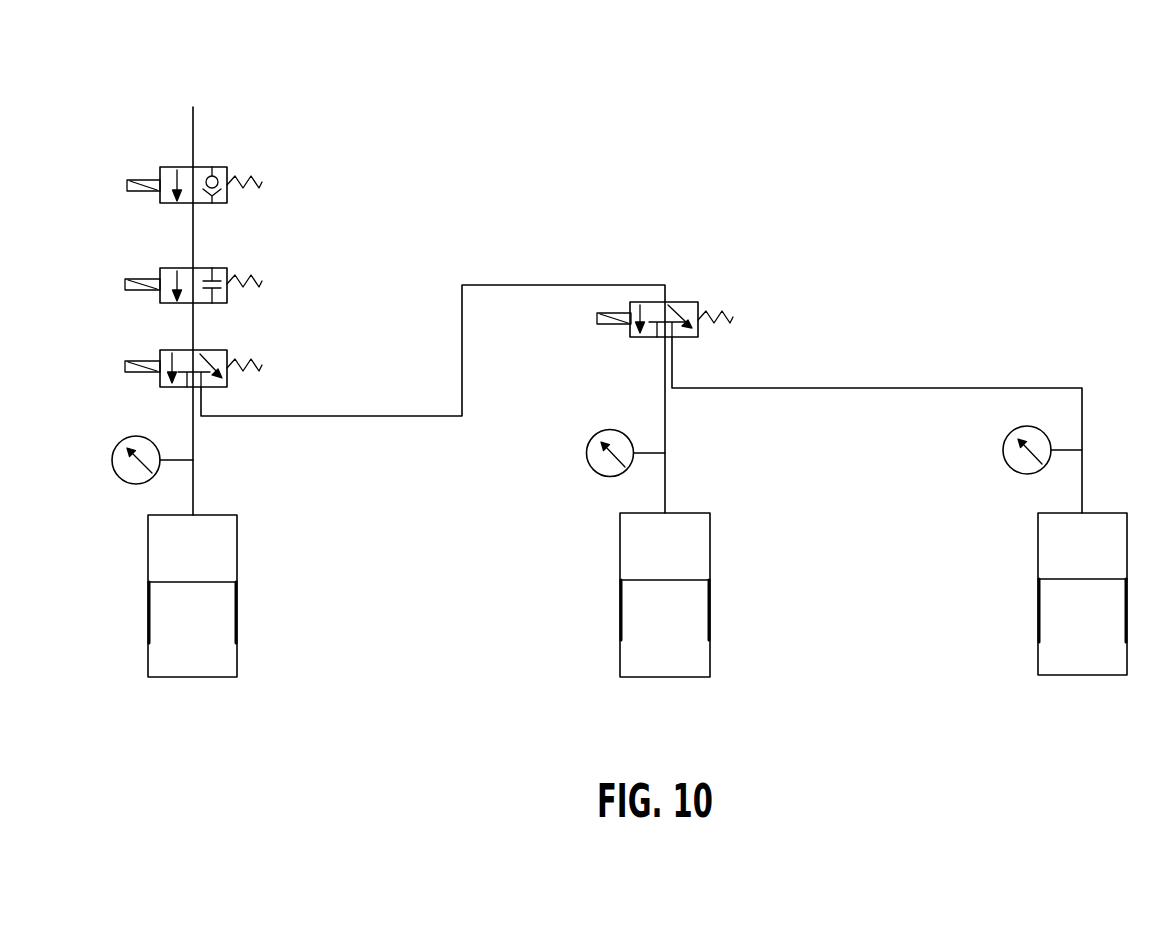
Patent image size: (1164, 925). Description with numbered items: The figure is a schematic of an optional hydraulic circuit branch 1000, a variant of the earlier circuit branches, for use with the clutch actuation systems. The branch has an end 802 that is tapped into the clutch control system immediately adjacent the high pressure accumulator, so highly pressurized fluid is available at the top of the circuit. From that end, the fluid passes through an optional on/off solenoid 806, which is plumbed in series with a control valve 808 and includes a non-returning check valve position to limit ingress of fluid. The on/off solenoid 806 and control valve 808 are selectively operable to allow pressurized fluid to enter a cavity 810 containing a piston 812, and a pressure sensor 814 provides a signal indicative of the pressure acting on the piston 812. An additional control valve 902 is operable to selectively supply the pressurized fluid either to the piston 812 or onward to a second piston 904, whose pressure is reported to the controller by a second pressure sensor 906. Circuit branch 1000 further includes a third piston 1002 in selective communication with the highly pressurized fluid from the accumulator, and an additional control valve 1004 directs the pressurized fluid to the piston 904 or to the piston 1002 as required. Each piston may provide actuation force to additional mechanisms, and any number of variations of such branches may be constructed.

The circuit branch 1000 is at (120, 86).
The end 802 is at (191, 107).
The on/off solenoid 806 is at (167, 168).
The control valve 808 is at (168, 267).
The control valve 902 is at (218, 350).
The pressure sensor 814 is at (135, 437).
The cavity 810 is at (236, 545).
The piston 812 is at (202, 667).
The control valve 1004 is at (693, 301).
The pressure sensor 906 is at (610, 430).
The piston 904 is at (683, 657).
The piston 1002 is at (1083, 658).